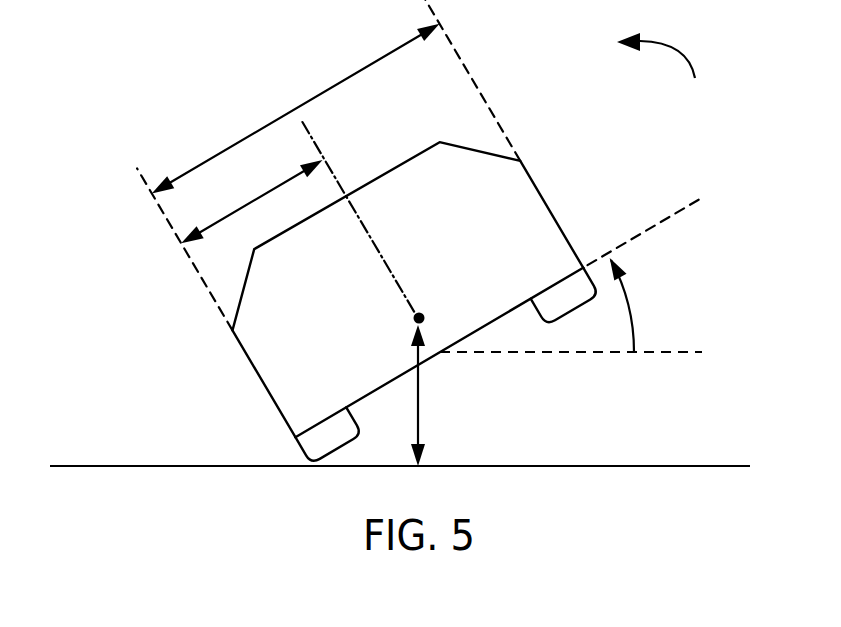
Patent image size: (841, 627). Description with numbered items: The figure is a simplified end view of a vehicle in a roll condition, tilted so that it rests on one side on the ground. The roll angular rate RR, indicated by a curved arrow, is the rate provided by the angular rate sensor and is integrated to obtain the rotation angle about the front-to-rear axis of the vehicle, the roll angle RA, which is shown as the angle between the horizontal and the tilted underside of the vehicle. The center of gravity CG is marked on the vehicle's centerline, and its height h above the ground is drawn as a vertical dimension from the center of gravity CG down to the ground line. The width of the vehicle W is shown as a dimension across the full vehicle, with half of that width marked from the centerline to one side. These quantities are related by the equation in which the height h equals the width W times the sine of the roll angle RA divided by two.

The width of the vehicle W is at (286, 99).
The center of gravity CG is at (425, 312).
The height of the center of gravity h is at (429, 395).
The roll angle RA is at (571, 305).
The roll angular rate RR is at (662, 42).